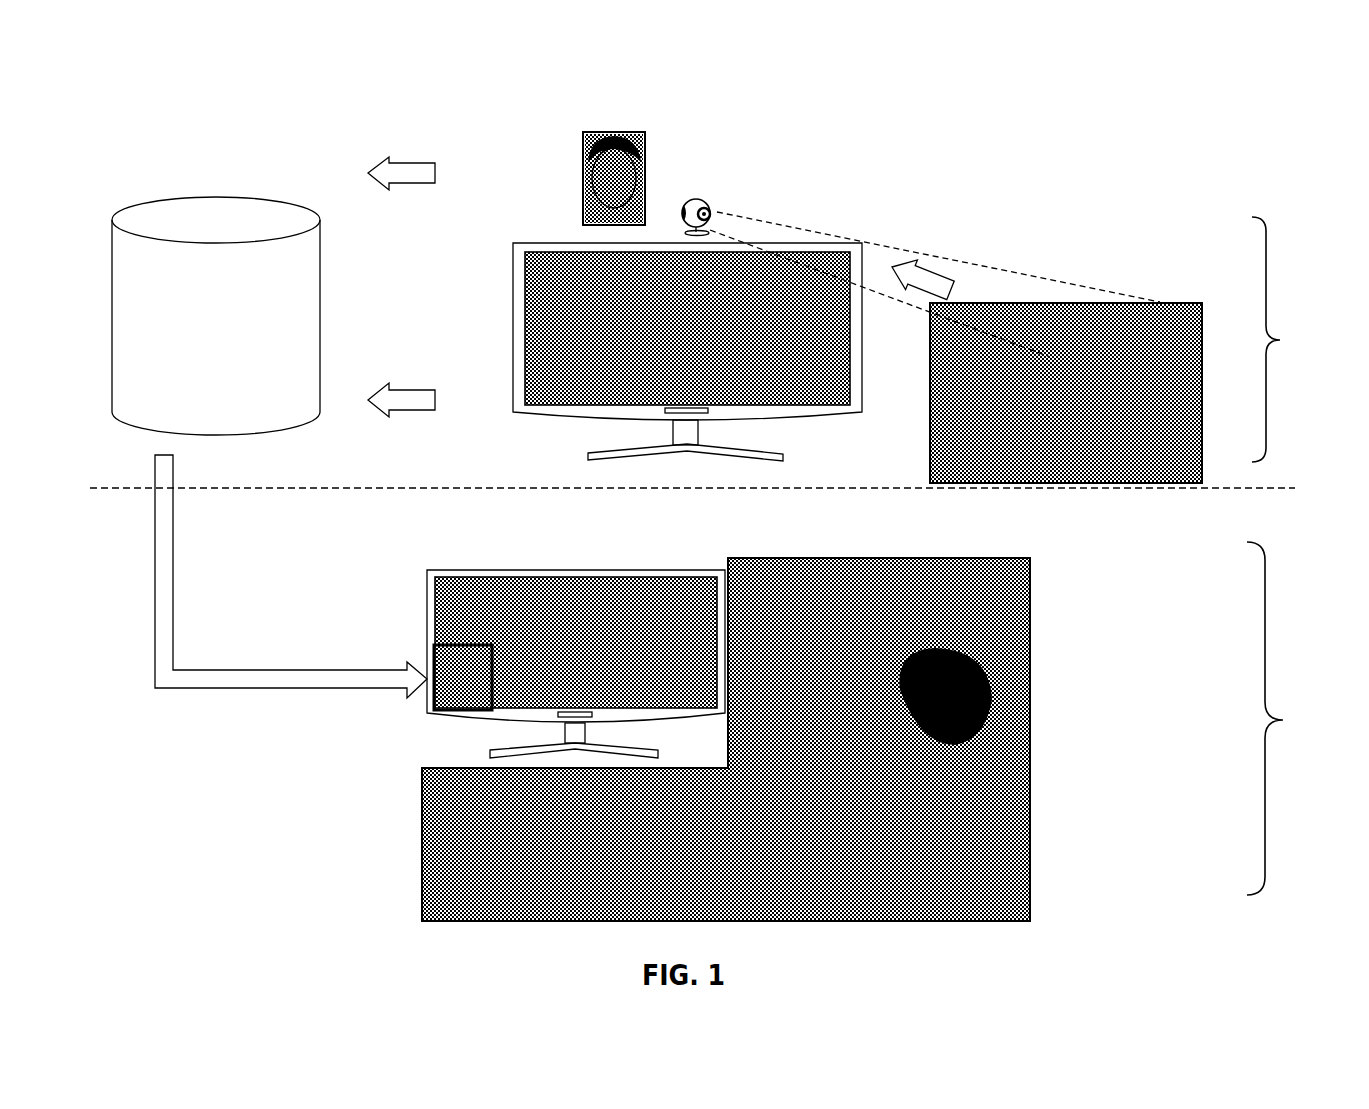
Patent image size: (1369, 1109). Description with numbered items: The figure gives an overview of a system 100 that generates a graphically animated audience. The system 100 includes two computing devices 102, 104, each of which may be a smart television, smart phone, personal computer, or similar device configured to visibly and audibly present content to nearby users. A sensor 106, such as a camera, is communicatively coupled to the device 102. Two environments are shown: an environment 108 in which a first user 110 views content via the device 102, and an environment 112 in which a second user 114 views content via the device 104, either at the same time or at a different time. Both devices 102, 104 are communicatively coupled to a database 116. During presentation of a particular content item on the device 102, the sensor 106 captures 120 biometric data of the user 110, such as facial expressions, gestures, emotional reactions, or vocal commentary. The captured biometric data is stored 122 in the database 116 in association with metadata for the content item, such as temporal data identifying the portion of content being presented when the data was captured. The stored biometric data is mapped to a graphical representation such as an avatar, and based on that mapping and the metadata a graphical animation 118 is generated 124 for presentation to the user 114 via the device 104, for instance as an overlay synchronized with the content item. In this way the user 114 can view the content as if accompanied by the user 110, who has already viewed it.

The system 100 is at (186, 100).
The computing device 102 is at (582, 243).
The computing device 104 is at (503, 556).
The sensor 106 is at (711, 203).
The environment 108 is at (1108, 350).
The first user 110 is at (1163, 302).
The environment 112 is at (876, 731).
The second user 114 is at (992, 697).
The database 116 is at (195, 196).
The graphical animation 118 is at (427, 713).
The capturing of biometric data 120 is at (893, 133).
The storing of biometric data 122 is at (473, 297).
The generating of graphical animation 124 is at (187, 611).